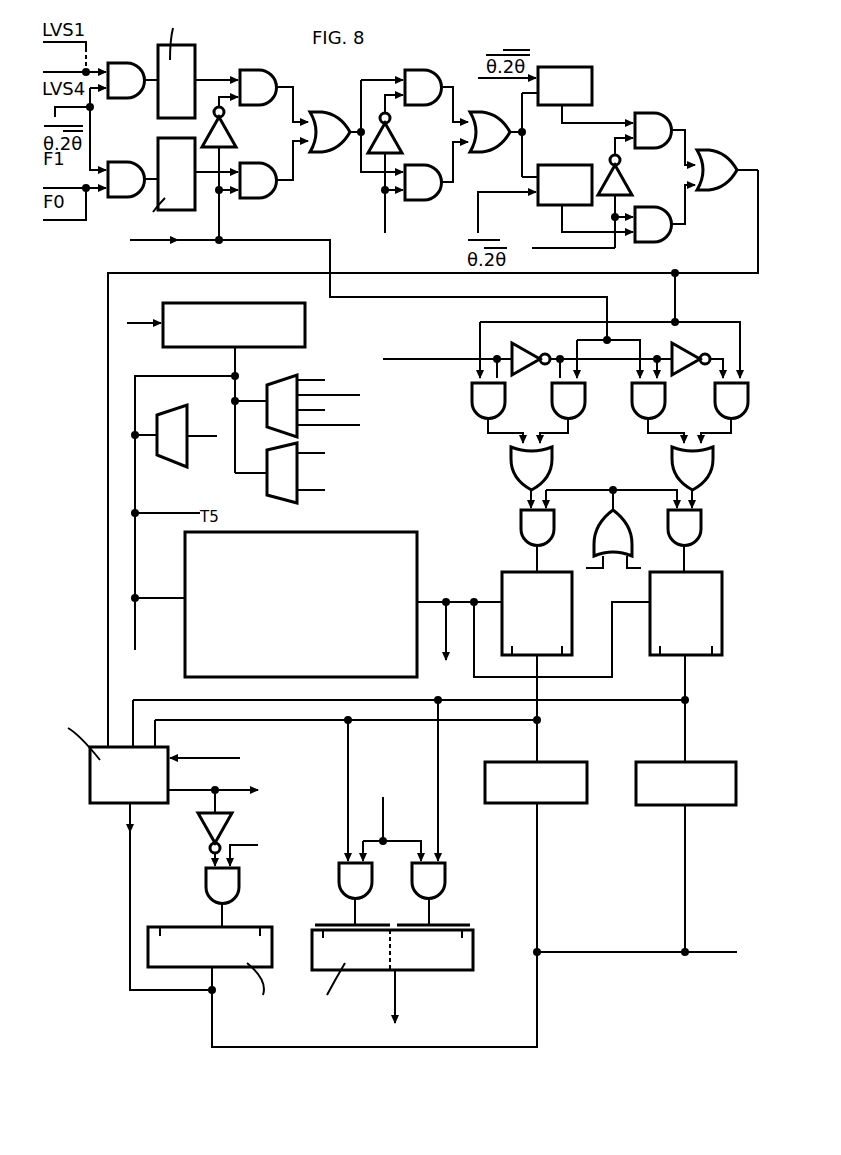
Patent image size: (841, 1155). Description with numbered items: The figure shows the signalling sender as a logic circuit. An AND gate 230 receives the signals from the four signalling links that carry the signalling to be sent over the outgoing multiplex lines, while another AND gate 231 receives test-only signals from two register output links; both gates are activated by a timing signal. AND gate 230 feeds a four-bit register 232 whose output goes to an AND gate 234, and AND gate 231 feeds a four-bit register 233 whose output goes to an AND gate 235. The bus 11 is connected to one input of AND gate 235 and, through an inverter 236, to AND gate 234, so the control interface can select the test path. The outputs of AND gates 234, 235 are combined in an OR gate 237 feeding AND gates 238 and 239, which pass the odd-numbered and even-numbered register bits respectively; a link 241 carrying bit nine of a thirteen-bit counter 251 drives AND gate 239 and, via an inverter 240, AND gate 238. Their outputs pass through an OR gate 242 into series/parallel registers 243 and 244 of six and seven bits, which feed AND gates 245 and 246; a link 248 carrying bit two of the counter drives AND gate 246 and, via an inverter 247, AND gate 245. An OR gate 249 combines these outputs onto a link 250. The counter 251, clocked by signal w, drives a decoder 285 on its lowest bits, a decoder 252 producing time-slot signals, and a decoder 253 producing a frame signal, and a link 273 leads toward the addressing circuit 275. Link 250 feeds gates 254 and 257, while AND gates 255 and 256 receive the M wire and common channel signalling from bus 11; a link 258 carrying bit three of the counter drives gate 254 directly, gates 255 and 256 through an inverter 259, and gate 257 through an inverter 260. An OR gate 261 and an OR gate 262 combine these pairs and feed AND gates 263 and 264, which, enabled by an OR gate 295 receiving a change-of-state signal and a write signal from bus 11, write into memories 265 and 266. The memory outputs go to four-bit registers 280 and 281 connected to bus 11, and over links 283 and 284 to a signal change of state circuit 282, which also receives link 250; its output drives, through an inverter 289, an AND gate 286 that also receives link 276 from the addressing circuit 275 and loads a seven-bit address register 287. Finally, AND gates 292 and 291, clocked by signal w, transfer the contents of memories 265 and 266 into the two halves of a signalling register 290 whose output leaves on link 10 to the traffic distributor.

The link 10 is at (398, 995).
The bus 11 is at (296, 255).
The AND gate 230 is at (120, 70).
The AND gate 231 is at (131, 188).
The 4-bit register 232 is at (196, 62).
The 4-bit register 233 is at (160, 152).
The AND gate 234 is at (260, 70).
The AND gate 235 is at (268, 190).
The inverter 236 is at (236, 135).
The OR gate 237 is at (330, 112).
The AND gate 238 is at (428, 75).
The AND gate 239 is at (430, 200).
The inverter 240 is at (401, 136).
The link 241 is at (393, 225).
The OR gate 242 is at (490, 150).
The series/parallel register 243 is at (592, 80).
The series/parallel register 244 is at (556, 165).
The AND gate 245 is at (655, 115).
The AND gate 246 is at (662, 236).
The inverter 247 is at (632, 184).
The link 248 is at (548, 248).
The OR gate 249 is at (712, 150).
The link 250 is at (718, 273).
The counter 251 is at (305, 330).
The decoder 252 is at (278, 490).
The decoder 253 is at (173, 462).
The AND gate 254 is at (472, 405).
The AND gate 255 is at (585, 412).
The AND gate 256 is at (633, 407).
The AND gate 257 is at (740, 420).
The link 258 is at (427, 359).
The inverter 259 is at (530, 375).
The inverter 260 is at (688, 375).
The OR gate 261 is at (520, 470).
The OR gate 262 is at (702, 468).
The AND gate 263 is at (522, 528).
The AND gate 264 is at (705, 530).
The memory 265 is at (515, 592).
The memory 266 is at (700, 655).
The line 273 is at (162, 558).
The addressing circuit 275 is at (385, 545).
The link 276 is at (432, 602).
The register 280 is at (560, 795).
The register 281 is at (668, 805).
The signal change of state circuit 282 is at (112, 787).
The link 283 is at (268, 722).
The line 284 is at (612, 702).
The decoder 285 is at (286, 390).
The AND gate 286 is at (206, 885).
The address register 287 is at (180, 927).
The inverter 289 is at (197, 832).
The signalling register 290 is at (473, 962).
The AND gate 291 is at (446, 880).
The AND gate 292 is at (340, 880).
The OR gate 295 is at (598, 540).